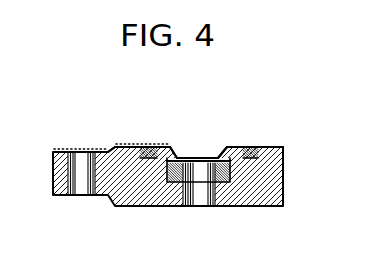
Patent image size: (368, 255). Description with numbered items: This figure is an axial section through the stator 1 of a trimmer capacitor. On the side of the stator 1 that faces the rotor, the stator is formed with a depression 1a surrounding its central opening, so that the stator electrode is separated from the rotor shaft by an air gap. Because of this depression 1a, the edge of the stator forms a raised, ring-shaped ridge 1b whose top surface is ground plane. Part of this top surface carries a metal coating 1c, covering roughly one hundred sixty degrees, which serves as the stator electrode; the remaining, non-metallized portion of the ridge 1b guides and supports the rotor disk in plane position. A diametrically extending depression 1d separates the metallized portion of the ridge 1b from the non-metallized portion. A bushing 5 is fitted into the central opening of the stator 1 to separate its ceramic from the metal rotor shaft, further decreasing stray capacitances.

The stator 1 is at (279, 173).
The depression 1a is at (234, 150).
The ring-shaped ridge 1b is at (270, 146).
The metal coating 1c is at (123, 145).
The diametrically extending depression 1d is at (195, 159).
The bushing 5 is at (208, 183).